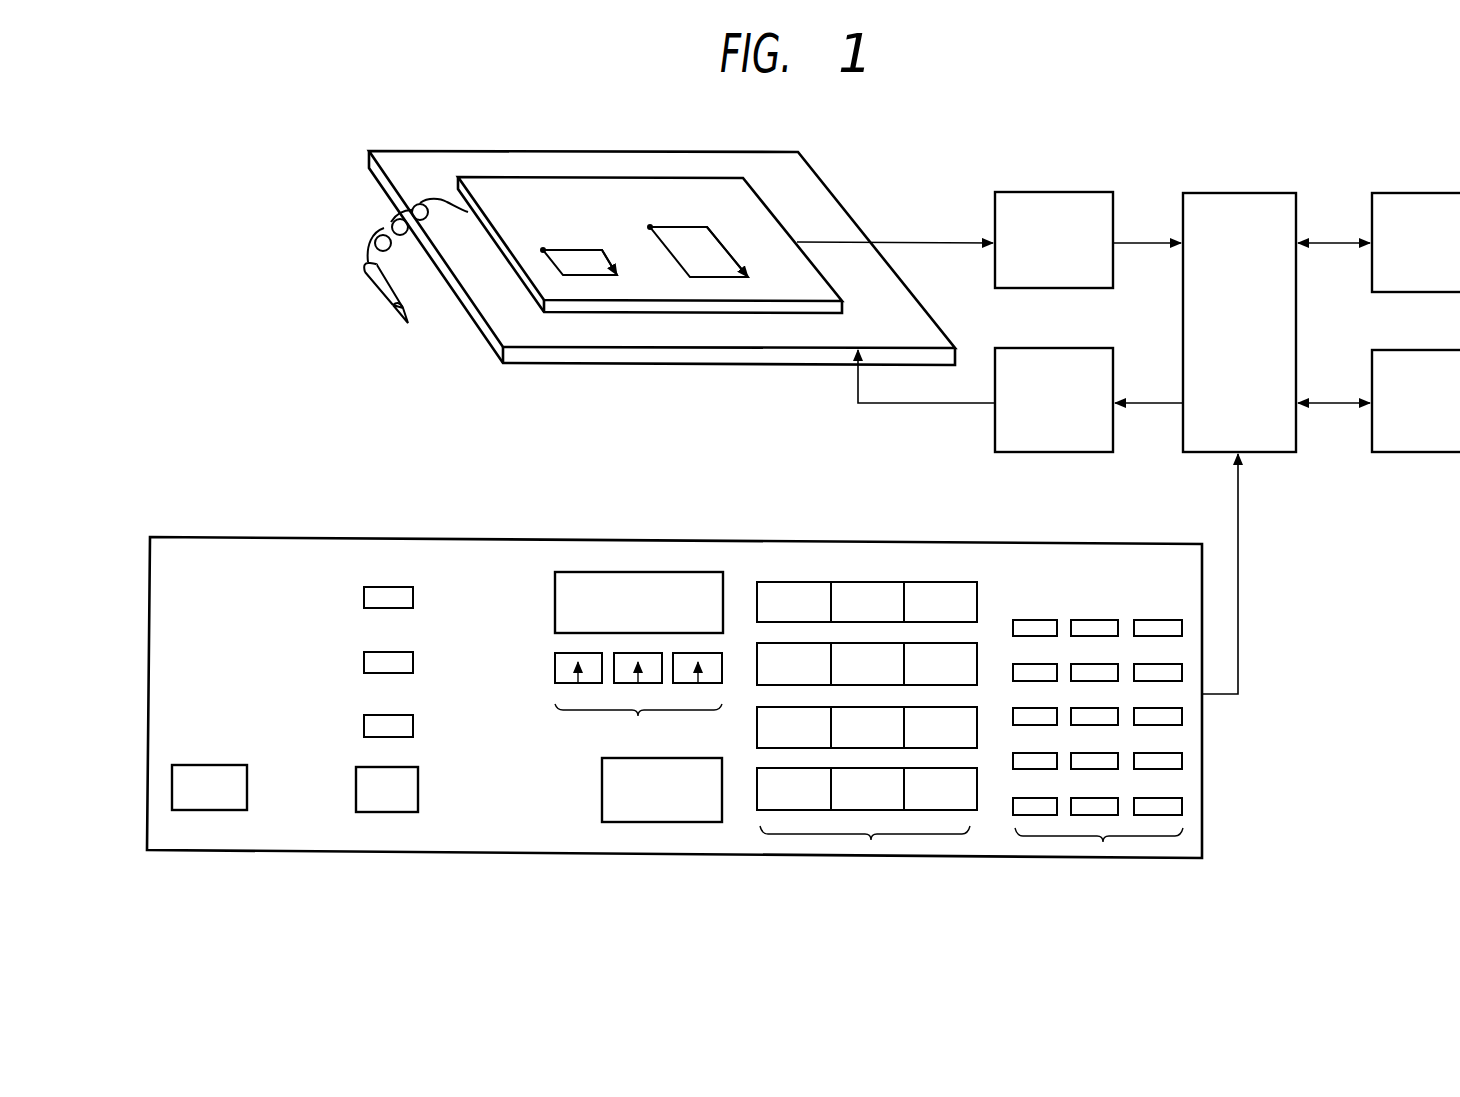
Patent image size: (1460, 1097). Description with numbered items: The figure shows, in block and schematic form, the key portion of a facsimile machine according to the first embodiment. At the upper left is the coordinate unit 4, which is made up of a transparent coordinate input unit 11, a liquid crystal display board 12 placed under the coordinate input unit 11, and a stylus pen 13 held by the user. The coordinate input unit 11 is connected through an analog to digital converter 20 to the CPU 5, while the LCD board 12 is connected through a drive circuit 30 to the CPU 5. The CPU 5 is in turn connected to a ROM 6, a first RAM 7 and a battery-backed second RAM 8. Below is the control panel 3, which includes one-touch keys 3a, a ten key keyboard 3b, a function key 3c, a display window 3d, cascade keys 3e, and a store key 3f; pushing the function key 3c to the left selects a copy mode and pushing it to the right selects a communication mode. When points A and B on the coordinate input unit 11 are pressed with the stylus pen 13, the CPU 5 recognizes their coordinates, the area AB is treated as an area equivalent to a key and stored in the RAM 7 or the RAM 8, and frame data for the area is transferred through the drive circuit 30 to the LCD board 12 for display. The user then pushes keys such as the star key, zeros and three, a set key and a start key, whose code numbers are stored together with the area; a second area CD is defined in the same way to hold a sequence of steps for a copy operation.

The control panel 3 is at (865, 539).
The one-touch keys 3a is at (1103, 845).
The ten key keyboard 3b is at (870, 842).
The function key 3c is at (393, 812).
The display window 3d is at (637, 571).
The cascade keys 3e is at (638, 702).
The store key 3f is at (213, 811).
The coordinate unit 4 is at (590, 150).
The CPU 5 is at (1280, 193).
The ROM 6 is at (1446, 193).
The first RAM 7 is at (1416, 428).
The second RAM 8 is at (1438, 452).
The coordinate input unit 11 is at (660, 177).
The LCD board 12 is at (782, 152).
The stylus pen 13 is at (383, 297).
The A/D converter 20 is at (1097, 192).
The drive circuit 30 is at (1088, 452).